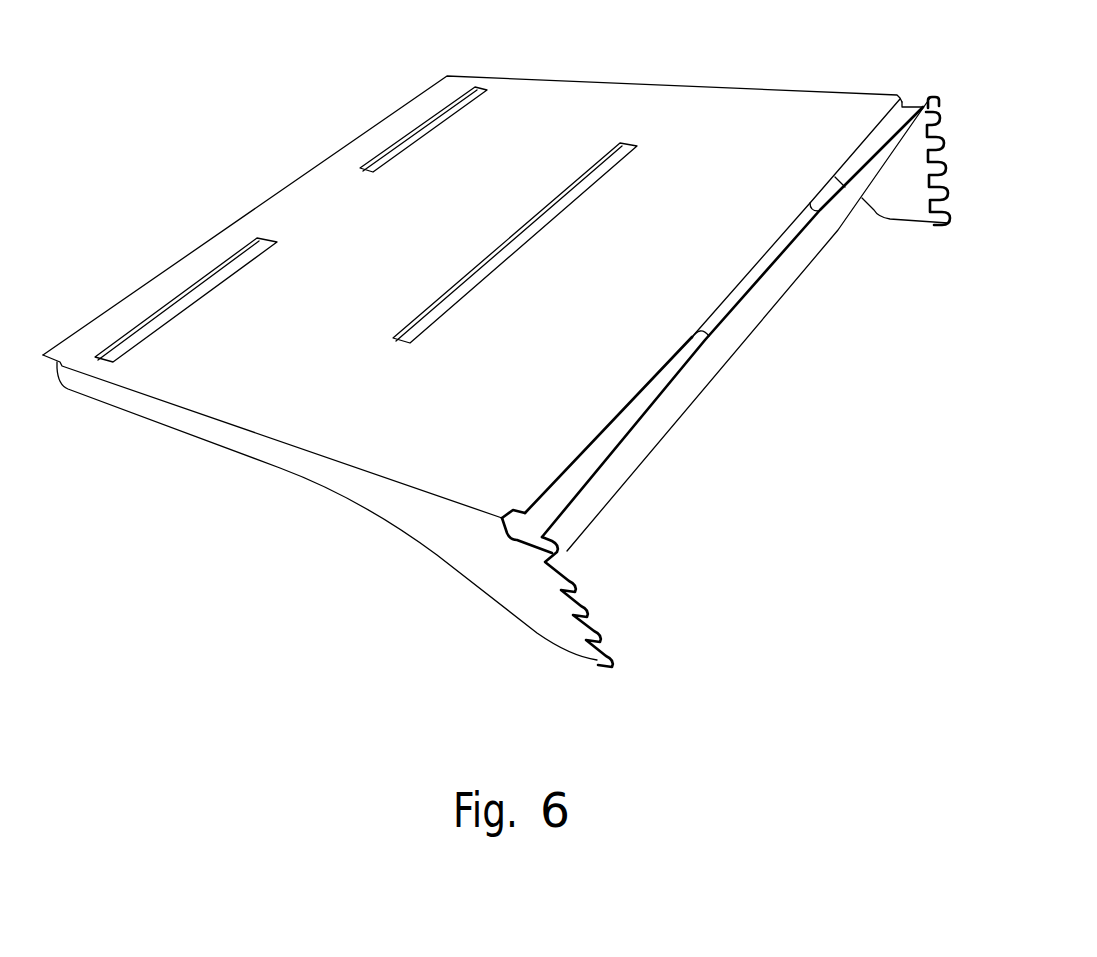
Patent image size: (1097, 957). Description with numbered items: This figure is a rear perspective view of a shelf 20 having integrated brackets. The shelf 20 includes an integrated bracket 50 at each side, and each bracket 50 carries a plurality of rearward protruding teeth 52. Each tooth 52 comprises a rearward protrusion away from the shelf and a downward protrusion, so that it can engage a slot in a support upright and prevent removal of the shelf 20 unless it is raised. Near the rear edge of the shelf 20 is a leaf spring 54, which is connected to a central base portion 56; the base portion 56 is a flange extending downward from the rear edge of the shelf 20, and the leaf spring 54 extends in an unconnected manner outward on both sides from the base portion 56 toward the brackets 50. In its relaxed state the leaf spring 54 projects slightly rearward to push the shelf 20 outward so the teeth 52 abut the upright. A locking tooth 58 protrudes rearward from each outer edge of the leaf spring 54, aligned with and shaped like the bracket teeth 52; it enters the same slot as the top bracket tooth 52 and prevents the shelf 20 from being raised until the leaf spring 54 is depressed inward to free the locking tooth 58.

The shelf 20 is at (546, 103).
The bracket 50 is at (498, 570).
The teeth 52 is at (615, 655).
The leaf spring 54 is at (870, 158).
The base portion 56 is at (775, 293).
The locking tooth 58 is at (933, 100).